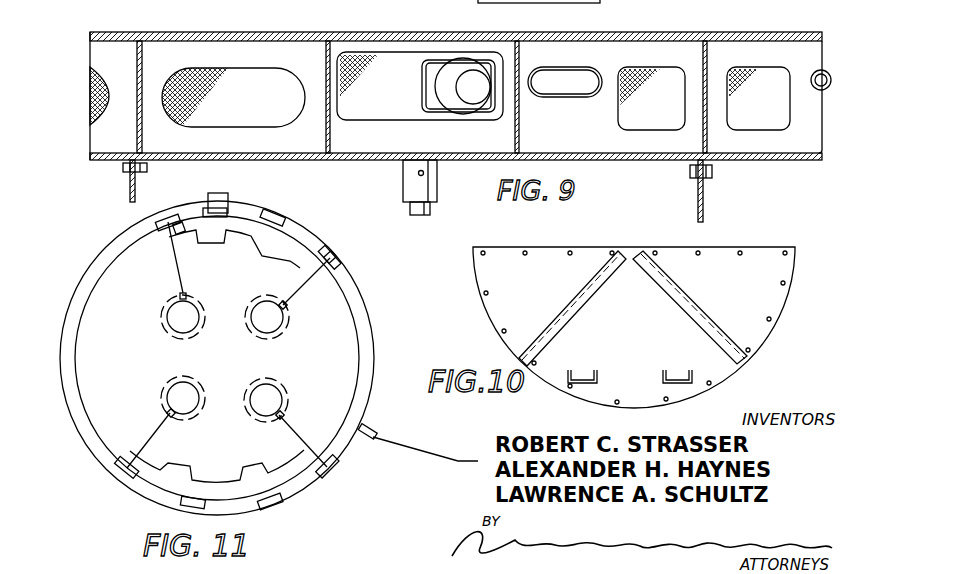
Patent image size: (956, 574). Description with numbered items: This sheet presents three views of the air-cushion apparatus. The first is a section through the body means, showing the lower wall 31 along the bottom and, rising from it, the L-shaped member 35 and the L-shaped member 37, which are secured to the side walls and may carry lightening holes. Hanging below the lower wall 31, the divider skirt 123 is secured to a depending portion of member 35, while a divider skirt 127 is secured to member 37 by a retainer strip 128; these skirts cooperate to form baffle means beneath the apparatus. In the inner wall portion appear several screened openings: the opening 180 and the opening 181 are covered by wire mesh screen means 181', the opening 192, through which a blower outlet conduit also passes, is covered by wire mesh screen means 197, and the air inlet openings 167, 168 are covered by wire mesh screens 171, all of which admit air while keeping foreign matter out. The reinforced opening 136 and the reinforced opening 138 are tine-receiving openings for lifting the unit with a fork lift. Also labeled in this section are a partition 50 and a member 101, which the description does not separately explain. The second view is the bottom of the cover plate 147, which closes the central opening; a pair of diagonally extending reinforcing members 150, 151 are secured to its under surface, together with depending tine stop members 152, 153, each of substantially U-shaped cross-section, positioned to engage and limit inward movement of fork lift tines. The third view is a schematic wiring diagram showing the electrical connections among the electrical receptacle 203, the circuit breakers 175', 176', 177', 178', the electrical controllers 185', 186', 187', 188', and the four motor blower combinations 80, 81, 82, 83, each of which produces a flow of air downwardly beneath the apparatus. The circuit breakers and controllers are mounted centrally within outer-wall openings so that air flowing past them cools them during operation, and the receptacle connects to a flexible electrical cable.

In FIG. 9, the L-shaped member 35 is at (137, 60).
In FIG. 9, the opening 181 is at (109, 110).
In FIG. 9, the wire mesh screen means 181' is at (209, 69).
In FIG. 9, the opening 180 is at (290, 116).
In FIG. 9, the lower wall 31 is at (300, 160).
In FIG. 9, the partition 50 is at (333, 52).
In FIG. 9, the wire mesh screen means 197 is at (380, 52).
In FIG. 9, the opening 192 is at (388, 114).
In FIG. 9, the reinforced opening 136 is at (542, 67).
In FIG. 9, the wire mesh screen 171 is at (651, 60).
In FIG. 9, the air inlet opening 167 is at (638, 122).
In FIG. 9, the air inlet opening 168 is at (760, 122).
In FIG. 9, the reinforced opening 138 is at (829, 78).
In FIG. 9, the L-shaped member 37 is at (713, 161).
In FIG. 9, the divider skirt 123 is at (128, 186).
In FIG. 9, the divider skirt 127 is at (704, 210).
In FIG. 9, the retainer strip 128 is at (692, 172).
In FIG. 9, the bracket 101 is at (412, 206).
In FIG. 11, the motor blower combination 83 is at (192, 300).
In FIG. 11, the motor blower combination 80 is at (262, 300).
In FIG. 11, the motor blower combination 82 is at (160, 390).
In FIG. 11, the motor blower combination 81 is at (289, 385).
In FIG. 11, the electrical controller 188' is at (165, 238).
In FIG. 11, the circuit breaker 178' is at (222, 193).
In FIG. 11, the circuit breaker 177' is at (278, 203).
In FIG. 11, the electrical controller 187' is at (330, 263).
In FIG. 11, the electrical controller 186' is at (130, 458).
In FIG. 11, the circuit breaker 176' is at (199, 486).
In FIG. 11, the circuit breaker 175' is at (268, 486).
In FIG. 11, the electrical controller 185' is at (326, 459).
In FIG. 11, the electrical receptacle 203 is at (377, 431).
In FIG. 10, the cover plate 147 is at (769, 306).
In FIG. 10, the reinforcing member 150 is at (592, 288).
In FIG. 10, the reinforcing member 151 is at (687, 303).
In FIG. 10, the tine stop member 152 is at (575, 377).
In FIG. 10, the tine stop member 153 is at (670, 377).